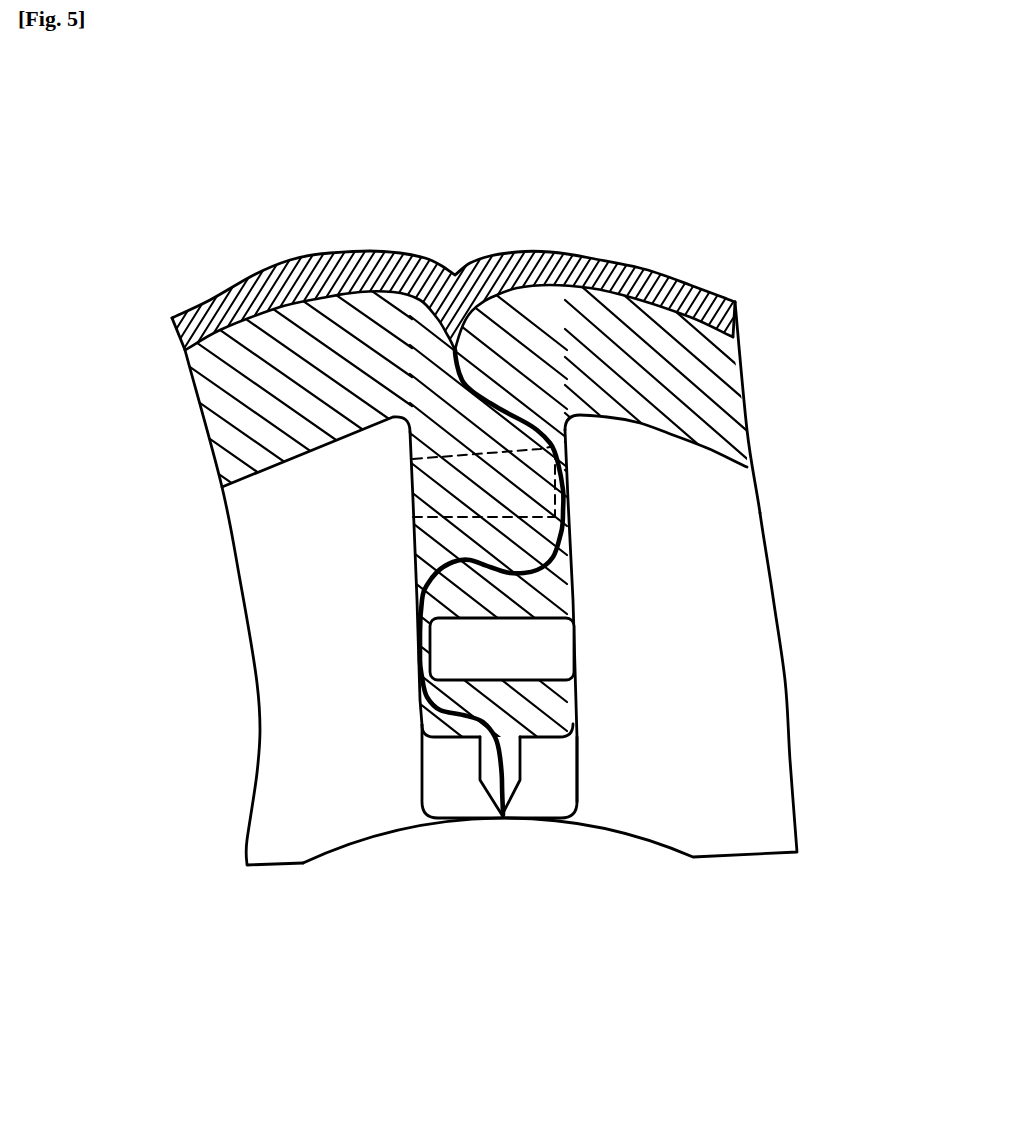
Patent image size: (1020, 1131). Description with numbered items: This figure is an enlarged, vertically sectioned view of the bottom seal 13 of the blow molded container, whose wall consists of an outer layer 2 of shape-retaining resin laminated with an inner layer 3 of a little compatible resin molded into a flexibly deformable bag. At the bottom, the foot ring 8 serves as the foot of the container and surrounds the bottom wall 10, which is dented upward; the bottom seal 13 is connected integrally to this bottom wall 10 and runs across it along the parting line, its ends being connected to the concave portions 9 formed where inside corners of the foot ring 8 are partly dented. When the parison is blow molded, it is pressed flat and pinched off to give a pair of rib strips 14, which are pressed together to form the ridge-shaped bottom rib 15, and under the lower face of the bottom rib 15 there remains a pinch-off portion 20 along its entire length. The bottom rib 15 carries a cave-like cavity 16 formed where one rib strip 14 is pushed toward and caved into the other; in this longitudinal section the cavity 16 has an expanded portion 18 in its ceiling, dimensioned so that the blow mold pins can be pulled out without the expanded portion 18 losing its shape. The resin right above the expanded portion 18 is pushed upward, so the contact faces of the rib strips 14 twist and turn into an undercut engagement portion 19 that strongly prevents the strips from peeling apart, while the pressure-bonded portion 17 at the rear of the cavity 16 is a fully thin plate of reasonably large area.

The outer layer 2 is at (217, 367).
The inner layer 3 is at (280, 265).
The foot ring 8 is at (272, 868).
The concave portions 9 is at (327, 862).
The bottom wall 10 is at (687, 337).
The bottom seal 13 is at (595, 758).
The rib strips 14 is at (432, 560).
The bottom rib 15 is at (460, 705).
The cavity 16 is at (453, 485).
The pressure-bonded portion 17 is at (420, 653).
The expanded portion 18 is at (550, 447).
The undercut engagement portion 19 is at (483, 560).
The pinch-off portion 20 is at (511, 740).